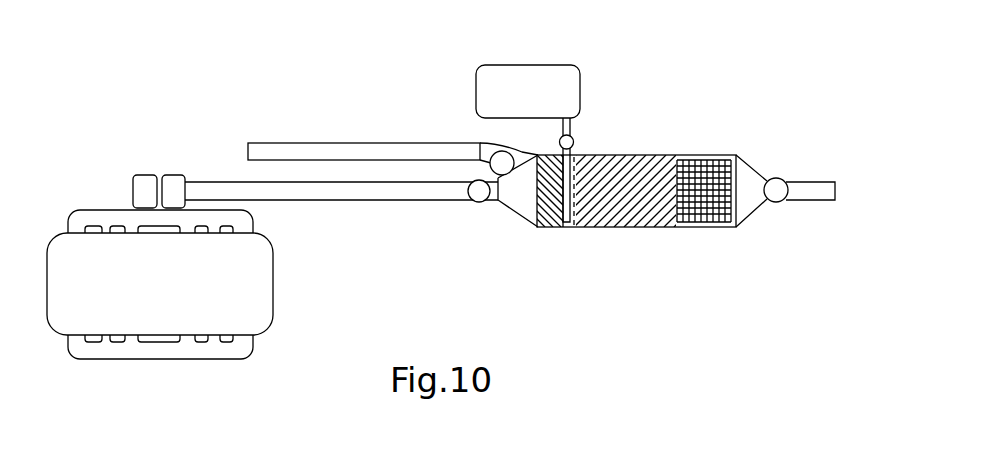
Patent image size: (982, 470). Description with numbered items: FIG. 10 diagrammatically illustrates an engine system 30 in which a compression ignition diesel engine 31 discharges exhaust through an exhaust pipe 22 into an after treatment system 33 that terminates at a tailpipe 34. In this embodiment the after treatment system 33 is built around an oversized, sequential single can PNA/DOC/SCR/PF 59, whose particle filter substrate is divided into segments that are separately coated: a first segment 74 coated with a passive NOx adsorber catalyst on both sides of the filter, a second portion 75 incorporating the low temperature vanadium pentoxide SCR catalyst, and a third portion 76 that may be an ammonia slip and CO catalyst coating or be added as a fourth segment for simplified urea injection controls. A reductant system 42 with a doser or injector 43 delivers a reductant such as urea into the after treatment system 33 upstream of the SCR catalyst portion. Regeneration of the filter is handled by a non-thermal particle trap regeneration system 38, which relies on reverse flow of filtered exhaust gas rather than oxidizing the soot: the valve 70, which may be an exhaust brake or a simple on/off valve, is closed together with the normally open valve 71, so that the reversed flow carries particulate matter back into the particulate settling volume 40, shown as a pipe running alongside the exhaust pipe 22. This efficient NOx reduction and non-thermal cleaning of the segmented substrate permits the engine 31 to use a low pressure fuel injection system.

The engine system 30 is at (312, 92).
The compression ignition diesel engine 31 is at (260, 340).
The exhaust pipe 22 is at (368, 208).
The after treatment system 33 is at (522, 300).
The tailpipe 34 is at (795, 182).
The non-thermal particle trap regeneration system 38 is at (512, 146).
The particulate settling volume 40 is at (423, 138).
The reductant system 42 is at (527, 62).
The doser or injector 43 is at (573, 151).
The single can PNA/DOC/SCR/PF combination 59 is at (595, 228).
The valve 70 is at (780, 204).
The normally open valve 71 is at (478, 207).
The first segment of the PF 74 is at (545, 225).
The second portion of the substrate filter 75 is at (598, 162).
The third portion of the substrate filter 76 is at (627, 165).